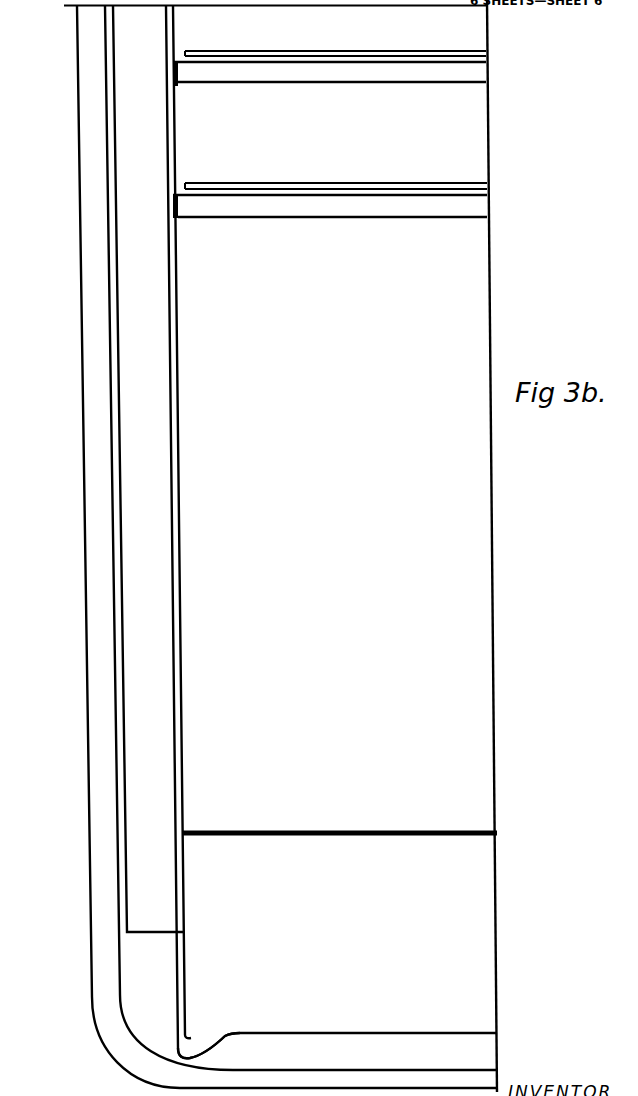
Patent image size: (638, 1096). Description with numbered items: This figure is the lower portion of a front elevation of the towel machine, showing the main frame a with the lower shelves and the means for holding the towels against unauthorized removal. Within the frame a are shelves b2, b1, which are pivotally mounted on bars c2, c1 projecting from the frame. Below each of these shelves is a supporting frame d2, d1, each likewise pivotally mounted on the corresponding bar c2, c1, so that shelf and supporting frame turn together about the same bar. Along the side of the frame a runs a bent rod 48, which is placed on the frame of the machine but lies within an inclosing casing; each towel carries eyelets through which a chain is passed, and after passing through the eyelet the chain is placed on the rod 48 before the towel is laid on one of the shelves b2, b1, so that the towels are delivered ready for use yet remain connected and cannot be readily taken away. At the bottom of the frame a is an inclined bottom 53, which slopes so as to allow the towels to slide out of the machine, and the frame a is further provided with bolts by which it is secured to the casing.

The bent rod 48 is at (93, 357).
The main frame a is at (140, 518).
The inclined bottom 53 is at (337, 945).
The shelf b2 is at (407, 55).
The bar c2 is at (176, 86).
The supporting frame d2 is at (437, 77).
The shelf b1 is at (392, 185).
The bar c1 is at (177, 220).
The supporting frame d1 is at (418, 208).